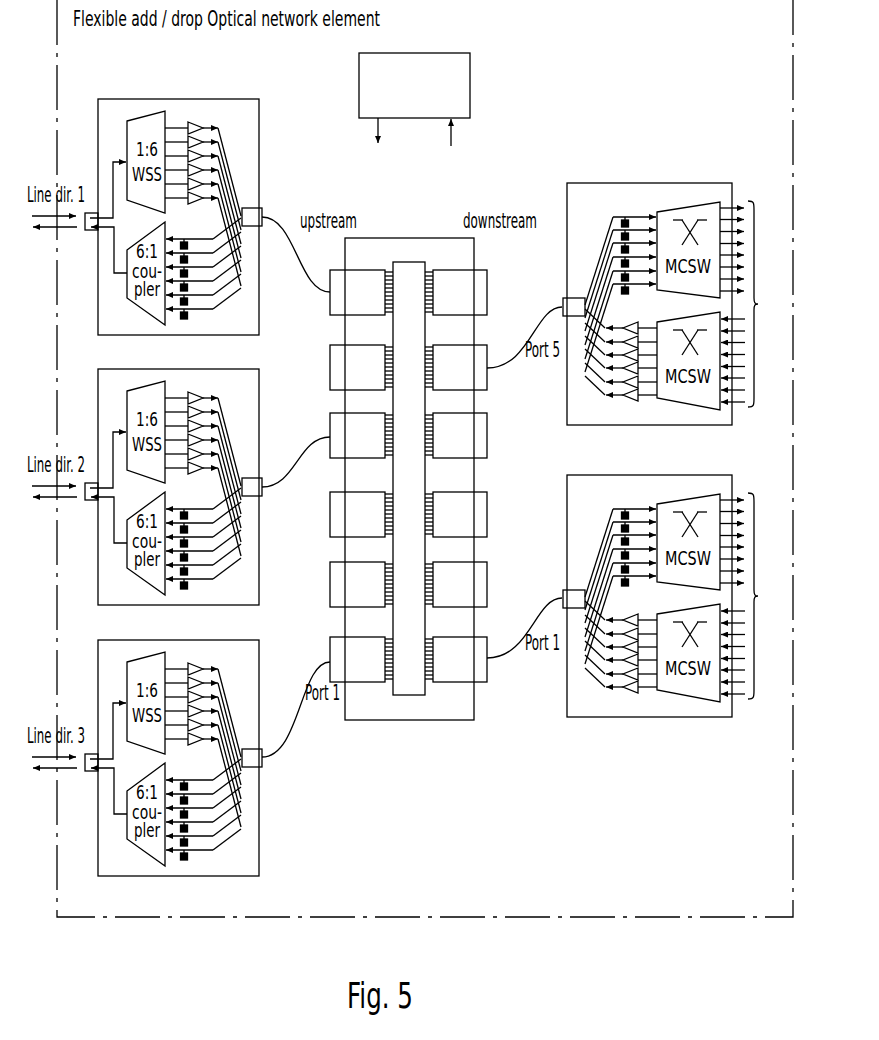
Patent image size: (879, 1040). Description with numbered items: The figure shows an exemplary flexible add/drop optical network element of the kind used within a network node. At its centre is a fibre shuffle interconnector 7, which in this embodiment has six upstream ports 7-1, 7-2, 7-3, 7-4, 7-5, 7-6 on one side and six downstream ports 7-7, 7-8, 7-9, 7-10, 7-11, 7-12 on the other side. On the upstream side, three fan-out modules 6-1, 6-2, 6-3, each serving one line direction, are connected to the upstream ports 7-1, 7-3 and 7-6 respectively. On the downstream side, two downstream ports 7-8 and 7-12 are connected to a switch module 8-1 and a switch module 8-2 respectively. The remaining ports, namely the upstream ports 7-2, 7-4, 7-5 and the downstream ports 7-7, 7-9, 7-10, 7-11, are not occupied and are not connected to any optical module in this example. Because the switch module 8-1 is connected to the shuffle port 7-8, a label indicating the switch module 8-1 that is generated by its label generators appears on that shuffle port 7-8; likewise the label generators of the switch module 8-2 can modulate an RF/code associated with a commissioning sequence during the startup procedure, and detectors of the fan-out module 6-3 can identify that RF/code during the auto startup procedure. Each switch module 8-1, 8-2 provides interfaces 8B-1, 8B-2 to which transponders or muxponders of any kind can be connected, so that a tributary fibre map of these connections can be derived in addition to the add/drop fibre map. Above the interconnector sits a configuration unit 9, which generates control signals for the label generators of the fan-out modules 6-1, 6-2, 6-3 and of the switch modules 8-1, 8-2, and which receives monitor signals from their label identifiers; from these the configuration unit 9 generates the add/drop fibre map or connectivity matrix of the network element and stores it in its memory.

The fan-out module 6-1 is at (243, 108).
The fan-out module 6-2 is at (249, 394).
The fan-out module 6-3 is at (247, 857).
The fibre shuffle interconnector 7 is at (413, 510).
The upstream port 7-1 is at (341, 303).
The upstream port 7-2 is at (341, 368).
The upstream port 7-3 is at (341, 424).
The upstream port 7-4 is at (341, 513).
The upstream port 7-5 is at (341, 583).
The upstream port 7-6 is at (341, 648).
The downstream port 7-7 is at (478, 295).
The downstream port 7-8 is at (478, 380).
The downstream port 7-9 is at (478, 439).
The downstream port 7-10 is at (478, 518).
The downstream port 7-11 is at (478, 588).
The downstream port 7-12 is at (478, 673).
The switch module 8-1 is at (695, 192).
The switch module 8-2 is at (617, 707).
The interface 8B-1 is at (755, 304).
The interface 8B-2 is at (755, 596).
The configuration unit 9 is at (463, 101).